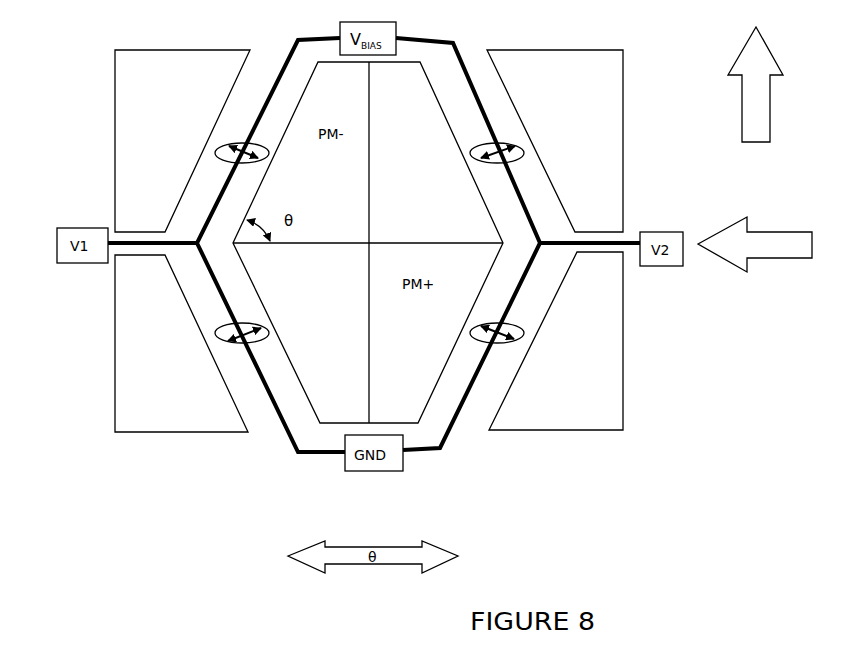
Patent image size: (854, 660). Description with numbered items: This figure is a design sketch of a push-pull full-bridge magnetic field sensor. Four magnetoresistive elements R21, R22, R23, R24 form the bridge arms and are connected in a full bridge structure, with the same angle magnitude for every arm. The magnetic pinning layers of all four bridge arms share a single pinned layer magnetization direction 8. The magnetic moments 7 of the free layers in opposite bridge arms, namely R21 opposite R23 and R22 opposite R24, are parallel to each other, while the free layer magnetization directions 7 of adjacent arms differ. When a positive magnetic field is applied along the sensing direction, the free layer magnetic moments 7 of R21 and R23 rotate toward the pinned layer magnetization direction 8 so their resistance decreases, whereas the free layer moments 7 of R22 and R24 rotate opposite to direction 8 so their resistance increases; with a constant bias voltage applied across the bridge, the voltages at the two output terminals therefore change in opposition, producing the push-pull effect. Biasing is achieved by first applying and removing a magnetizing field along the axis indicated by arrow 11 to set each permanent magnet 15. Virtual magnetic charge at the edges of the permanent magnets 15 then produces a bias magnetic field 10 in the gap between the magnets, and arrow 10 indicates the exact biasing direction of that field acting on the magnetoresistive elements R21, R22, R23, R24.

The magnetic moment of free layer 7 is at (293, 117).
The pinned layer magnetization direction 8 is at (757, 107).
The bias magnetic field 10 is at (265, 400).
The magnetizing field axis 11 is at (763, 245).
The permanent magnet 15 is at (588, 405).
The magnetoresistive element R21 is at (258, 160).
The magnetoresistive element R22 is at (518, 160).
The magnetoresistive element R23 is at (498, 340).
The magnetoresistive element R24 is at (240, 342).